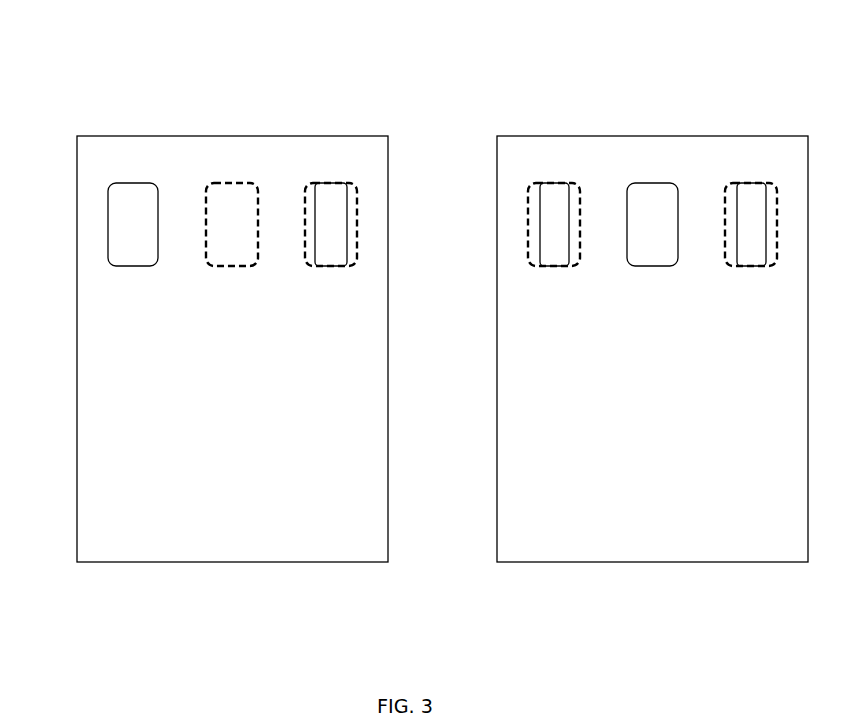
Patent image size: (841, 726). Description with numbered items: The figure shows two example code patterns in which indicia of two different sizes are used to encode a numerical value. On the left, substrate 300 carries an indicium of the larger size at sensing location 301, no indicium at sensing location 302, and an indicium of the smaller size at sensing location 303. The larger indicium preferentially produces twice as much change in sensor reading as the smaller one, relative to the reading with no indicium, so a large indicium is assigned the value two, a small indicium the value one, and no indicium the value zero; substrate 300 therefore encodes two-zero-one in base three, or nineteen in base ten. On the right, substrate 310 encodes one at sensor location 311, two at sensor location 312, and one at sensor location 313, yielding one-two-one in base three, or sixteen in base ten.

The substrate 300 is at (231, 594).
The sensing location 301 is at (135, 152).
The sensing location 302 is at (235, 152).
The sensing location 303 is at (332, 152).
The substrate 310 is at (651, 594).
The sensor location 311 is at (557, 152).
The sensor location 312 is at (655, 152).
The sensor location 313 is at (753, 152).